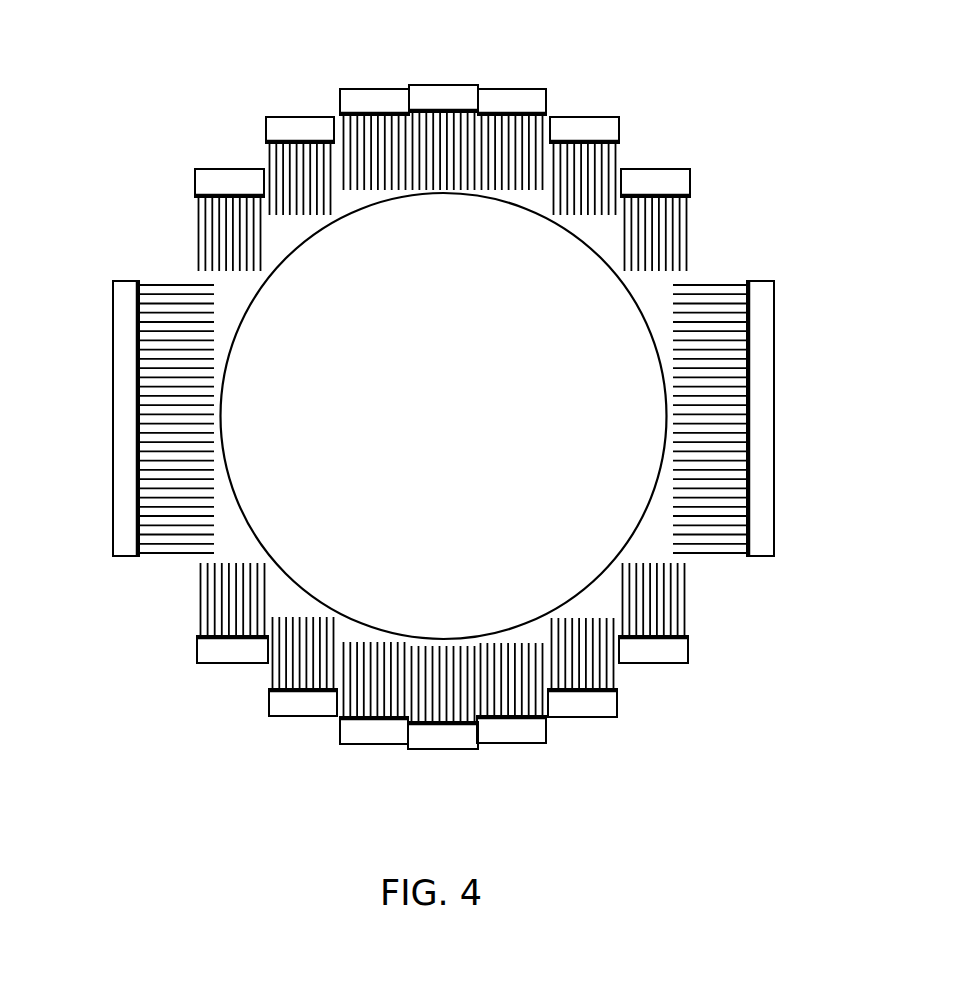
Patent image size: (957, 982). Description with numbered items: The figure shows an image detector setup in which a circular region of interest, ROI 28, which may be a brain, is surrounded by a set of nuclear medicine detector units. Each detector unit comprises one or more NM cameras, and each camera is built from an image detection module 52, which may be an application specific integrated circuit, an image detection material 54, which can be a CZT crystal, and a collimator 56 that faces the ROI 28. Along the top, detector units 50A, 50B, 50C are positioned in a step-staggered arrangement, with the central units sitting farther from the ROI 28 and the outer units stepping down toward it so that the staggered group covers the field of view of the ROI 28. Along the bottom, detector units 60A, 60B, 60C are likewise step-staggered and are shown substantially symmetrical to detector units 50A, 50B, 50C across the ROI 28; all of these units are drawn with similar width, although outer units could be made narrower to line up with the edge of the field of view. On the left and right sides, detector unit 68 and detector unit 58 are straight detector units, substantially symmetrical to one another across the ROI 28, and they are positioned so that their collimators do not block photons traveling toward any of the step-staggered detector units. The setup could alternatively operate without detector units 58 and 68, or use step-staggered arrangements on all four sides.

The ROI 28 is at (633, 541).
The detector unit 50A is at (672, 165).
The detector unit 50B is at (602, 110).
The detector unit 50C is at (532, 82).
The image detection module 52 is at (189, 200).
The image detection material 54 is at (196, 197).
The collimator 56 is at (197, 231).
The detector unit 58 is at (782, 302).
The detector unit 60A is at (667, 667).
The detector unit 60B is at (596, 720).
The detector unit 60C is at (525, 747).
The detector unit 68 is at (108, 493).